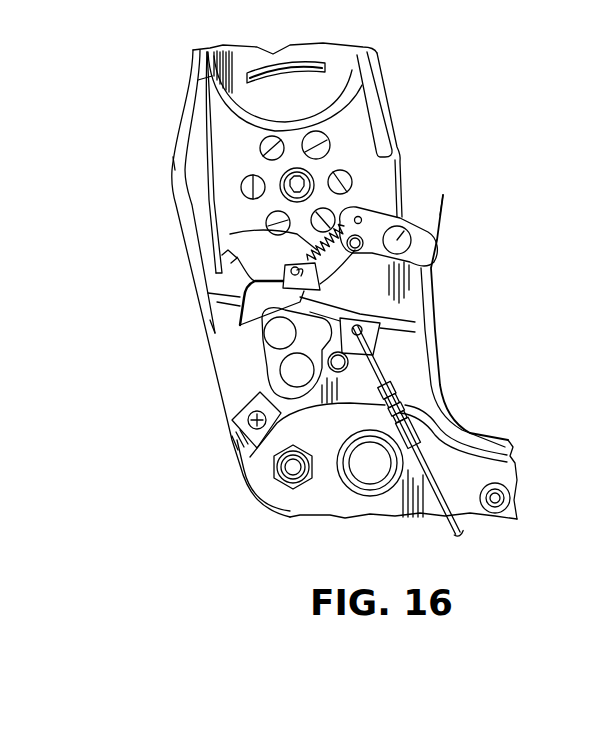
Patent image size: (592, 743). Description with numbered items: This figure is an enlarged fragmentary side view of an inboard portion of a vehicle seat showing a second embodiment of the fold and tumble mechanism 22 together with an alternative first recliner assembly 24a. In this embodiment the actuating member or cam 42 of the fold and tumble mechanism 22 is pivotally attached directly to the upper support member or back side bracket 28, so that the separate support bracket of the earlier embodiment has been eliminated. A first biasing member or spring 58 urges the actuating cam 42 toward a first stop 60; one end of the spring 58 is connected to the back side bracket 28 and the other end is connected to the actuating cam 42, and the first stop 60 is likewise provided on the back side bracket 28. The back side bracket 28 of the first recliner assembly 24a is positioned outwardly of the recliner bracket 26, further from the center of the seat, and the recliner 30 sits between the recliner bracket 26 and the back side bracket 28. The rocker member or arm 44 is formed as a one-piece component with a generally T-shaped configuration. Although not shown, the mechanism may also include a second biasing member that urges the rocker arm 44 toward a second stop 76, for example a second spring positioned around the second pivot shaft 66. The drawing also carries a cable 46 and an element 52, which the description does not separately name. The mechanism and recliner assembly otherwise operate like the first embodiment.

The fold and tumble mechanism 22 is at (452, 250).
The first recliner assembly 24a is at (165, 113).
The recliner bracket 26 is at (215, 335).
The back side bracket 28 is at (198, 80).
The recliner 30 is at (327, 136).
The actuating cam 42 is at (443, 195).
The rocker arm 44 is at (253, 372).
The cable 46 is at (437, 485).
The pivot lever 52 is at (410, 228).
The first spring 58 is at (265, 226).
The first stop 60 is at (358, 249).
The second pivot shaft 66 is at (235, 420).
The second stop 76 is at (348, 370).